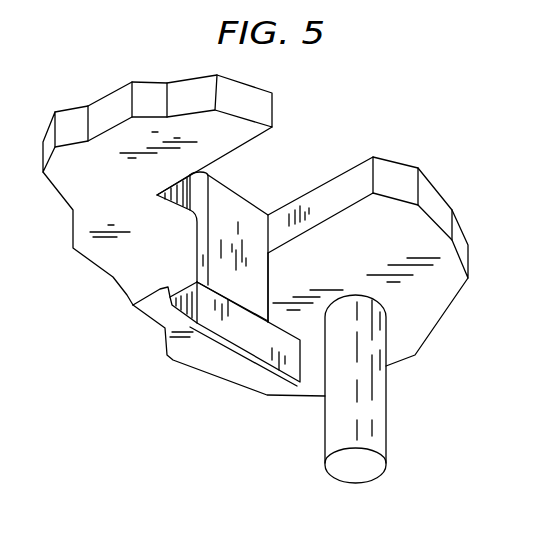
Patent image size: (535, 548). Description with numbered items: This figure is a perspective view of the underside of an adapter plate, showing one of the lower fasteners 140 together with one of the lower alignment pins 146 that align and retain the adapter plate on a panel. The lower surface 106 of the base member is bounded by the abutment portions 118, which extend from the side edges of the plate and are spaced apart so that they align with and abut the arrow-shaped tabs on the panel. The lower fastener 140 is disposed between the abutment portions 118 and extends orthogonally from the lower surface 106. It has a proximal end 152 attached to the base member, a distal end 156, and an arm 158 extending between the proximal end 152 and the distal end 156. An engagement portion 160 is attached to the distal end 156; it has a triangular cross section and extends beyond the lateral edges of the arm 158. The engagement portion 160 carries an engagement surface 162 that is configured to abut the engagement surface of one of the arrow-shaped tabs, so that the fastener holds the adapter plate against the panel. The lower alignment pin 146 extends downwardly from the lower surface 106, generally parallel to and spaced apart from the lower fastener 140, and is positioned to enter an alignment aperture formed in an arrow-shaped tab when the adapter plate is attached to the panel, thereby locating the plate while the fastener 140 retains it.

The abutment portion 118 is at (130, 135).
The lower surface 106 is at (125, 188).
The proximal end 152 is at (245, 207).
The arm 158 is at (221, 248).
The distal end 156 is at (205, 260).
The lower fastener 140 is at (269, 290).
The engagement surface 162 is at (133, 305).
The engagement portion 160 is at (258, 343).
The lower alignment pin 146 is at (377, 408).